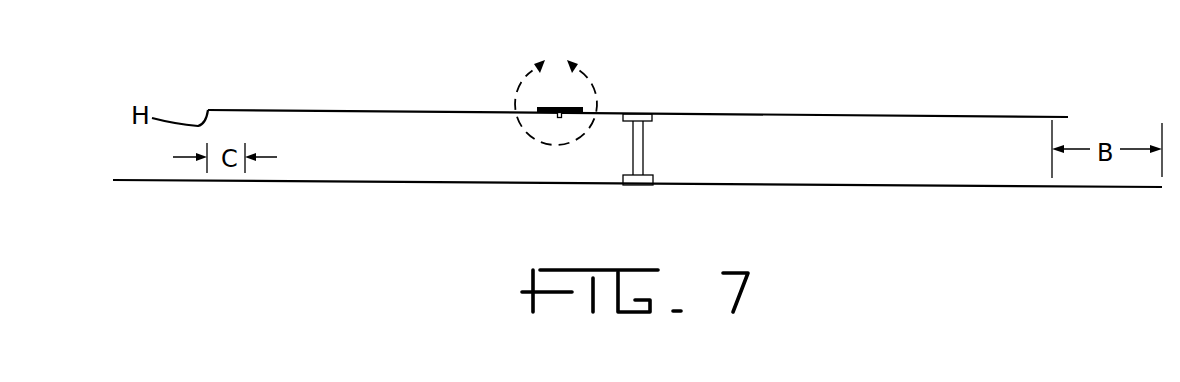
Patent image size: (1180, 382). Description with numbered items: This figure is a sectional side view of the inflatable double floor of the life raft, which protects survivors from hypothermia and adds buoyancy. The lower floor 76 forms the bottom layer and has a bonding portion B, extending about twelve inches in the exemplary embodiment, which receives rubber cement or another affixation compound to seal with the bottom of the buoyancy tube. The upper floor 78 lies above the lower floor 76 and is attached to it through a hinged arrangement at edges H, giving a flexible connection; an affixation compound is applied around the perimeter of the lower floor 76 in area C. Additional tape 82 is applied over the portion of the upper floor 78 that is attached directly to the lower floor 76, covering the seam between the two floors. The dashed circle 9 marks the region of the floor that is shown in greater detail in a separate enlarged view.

The detail circle indicating FIG. 9 area 9 is at (556, 92).
The lower floor 76 is at (881, 190).
The upper floor 78 is at (818, 112).
The tape 82 is at (208, 99).